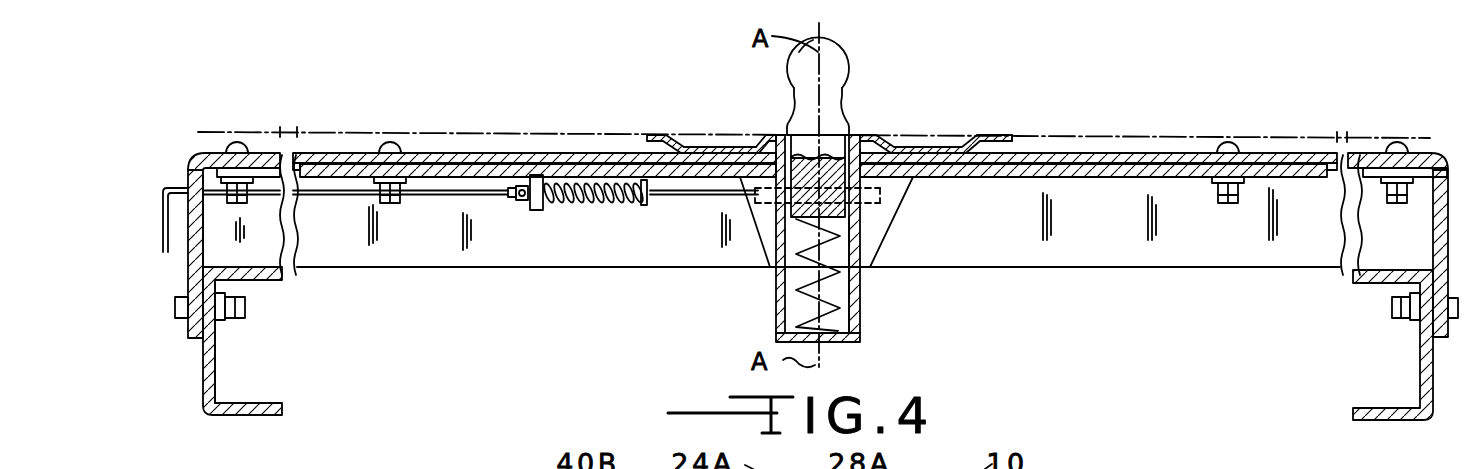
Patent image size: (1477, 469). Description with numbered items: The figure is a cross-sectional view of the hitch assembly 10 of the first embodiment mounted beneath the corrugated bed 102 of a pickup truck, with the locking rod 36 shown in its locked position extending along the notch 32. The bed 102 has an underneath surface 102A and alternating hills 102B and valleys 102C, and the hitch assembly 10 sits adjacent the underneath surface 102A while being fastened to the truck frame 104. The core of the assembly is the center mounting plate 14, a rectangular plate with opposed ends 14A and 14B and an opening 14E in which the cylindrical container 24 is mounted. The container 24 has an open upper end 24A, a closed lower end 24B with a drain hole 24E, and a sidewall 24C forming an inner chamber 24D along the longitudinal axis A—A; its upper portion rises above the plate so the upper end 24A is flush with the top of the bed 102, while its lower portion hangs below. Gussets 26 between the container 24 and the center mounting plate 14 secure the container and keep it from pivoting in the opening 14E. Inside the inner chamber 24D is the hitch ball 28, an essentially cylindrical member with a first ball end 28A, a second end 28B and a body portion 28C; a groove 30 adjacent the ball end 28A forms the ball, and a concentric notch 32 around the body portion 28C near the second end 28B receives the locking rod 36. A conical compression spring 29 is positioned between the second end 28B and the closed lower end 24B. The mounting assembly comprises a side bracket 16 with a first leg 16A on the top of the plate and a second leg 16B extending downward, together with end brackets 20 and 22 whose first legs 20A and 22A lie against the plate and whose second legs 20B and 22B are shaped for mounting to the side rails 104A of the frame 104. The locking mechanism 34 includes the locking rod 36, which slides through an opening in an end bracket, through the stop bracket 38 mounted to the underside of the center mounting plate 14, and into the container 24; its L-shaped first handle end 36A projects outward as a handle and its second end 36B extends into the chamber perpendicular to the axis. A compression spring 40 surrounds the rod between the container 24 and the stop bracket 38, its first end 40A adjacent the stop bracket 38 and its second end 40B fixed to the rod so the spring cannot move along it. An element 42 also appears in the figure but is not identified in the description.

The hitch assembly 10 is at (940, 76).
The center mounting plate 14 is at (1138, 158).
The first end of center mounting plate 14A is at (303, 167).
The second end of center mounting plate 14B is at (1328, 170).
The opening of center mounting plate 14E is at (868, 165).
The side bracket 16 is at (1438, 153).
The first leg of side bracket 16A is at (1177, 160).
The second leg of side bracket 16B is at (1120, 250).
The end bracket 20 is at (197, 340).
The first leg of end bracket 20A is at (213, 167).
The second leg of end bracket 20B is at (188, 255).
The end bracket 22 is at (1432, 354).
The first leg of end bracket 22A is at (1357, 153).
The second leg of end bracket 22B is at (1441, 230).
The container 24 is at (860, 252).
The open upper end of container 24A is at (778, 135).
The closed lower end of container 24B is at (861, 335).
The sidewall of container 24C is at (860, 312).
The inner chamber of container 24D is at (845, 297).
The drain hole 24E is at (821, 342).
The gussets 26 is at (897, 203).
The hitch ball 28 is at (850, 62).
The first ball end of hitch ball 28A is at (792, 65).
The second end of hitch ball 28B is at (791, 218).
The body portion of hitch ball 28C is at (851, 130).
The spring 29 is at (792, 298).
The groove 30 is at (840, 98).
The notch 32 is at (860, 243).
The locking mechanism 34 is at (427, 226).
The locking rod 36 is at (322, 197).
The first handle end of locking rod 36A is at (155, 217).
The second end of locking rod 36B is at (880, 192).
The stop bracket 38 is at (532, 212).
The compression spring 40 is at (574, 203).
The first end of compression spring 40A is at (540, 175).
The second end of compression spring 40B is at (643, 205).
The fastener 42 is at (393, 150).
The bed 102 is at (657, 138).
The underneath surface of bed 102A is at (710, 157).
The hills of bed 102B is at (1005, 128).
The valleys of bed 102C is at (1005, 137).
The frame 104 is at (237, 417).
The side rails of frame 104A is at (217, 373).